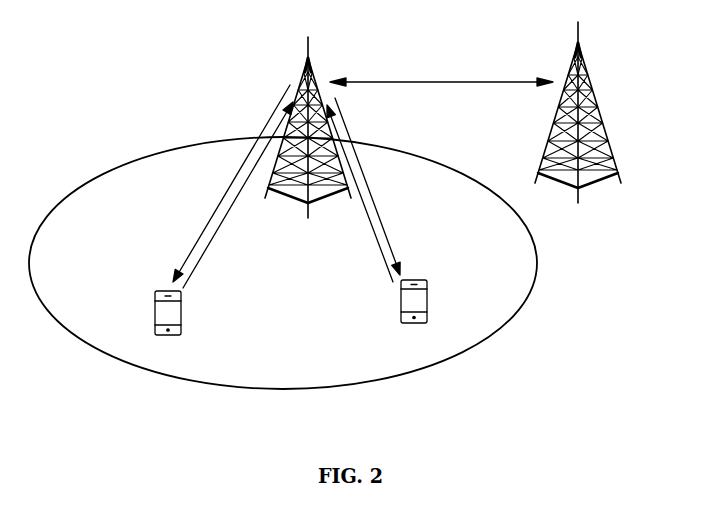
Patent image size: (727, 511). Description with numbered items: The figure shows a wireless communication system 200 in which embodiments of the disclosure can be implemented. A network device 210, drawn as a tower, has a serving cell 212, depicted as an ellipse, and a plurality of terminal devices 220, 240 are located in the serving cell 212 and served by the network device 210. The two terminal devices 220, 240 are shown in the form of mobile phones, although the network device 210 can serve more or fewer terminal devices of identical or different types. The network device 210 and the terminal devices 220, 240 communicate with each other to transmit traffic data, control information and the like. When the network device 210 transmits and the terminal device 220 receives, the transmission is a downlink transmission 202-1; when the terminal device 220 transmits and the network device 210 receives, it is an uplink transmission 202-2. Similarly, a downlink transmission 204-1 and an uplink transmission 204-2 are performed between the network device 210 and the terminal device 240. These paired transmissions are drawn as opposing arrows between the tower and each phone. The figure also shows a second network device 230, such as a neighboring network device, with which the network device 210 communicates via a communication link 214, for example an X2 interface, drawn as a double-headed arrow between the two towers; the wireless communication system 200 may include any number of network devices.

The wireless communication system 200 is at (190, 74).
The network device 210 is at (312, 65).
The serving cell 212 is at (141, 158).
The communication link 214 is at (425, 81).
The terminal device 220 is at (181, 320).
The network device 230 is at (582, 50).
The terminal device 240 is at (428, 302).
The downlink transmission 202-1 is at (217, 205).
The uplink transmission 202-2 is at (216, 232).
The downlink transmission 204-1 is at (375, 207).
The uplink transmission 204-2 is at (385, 260).